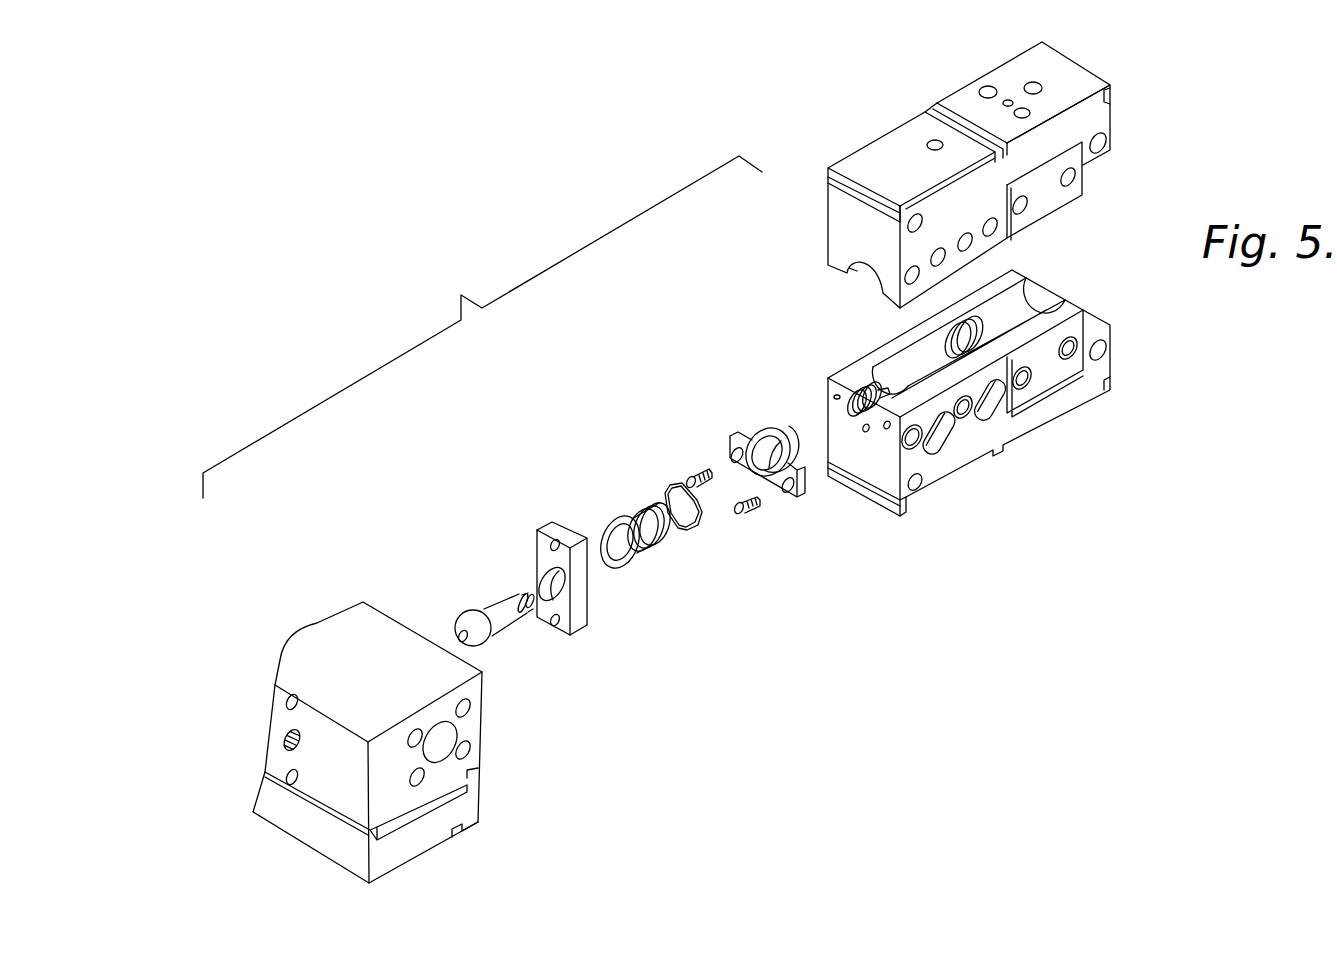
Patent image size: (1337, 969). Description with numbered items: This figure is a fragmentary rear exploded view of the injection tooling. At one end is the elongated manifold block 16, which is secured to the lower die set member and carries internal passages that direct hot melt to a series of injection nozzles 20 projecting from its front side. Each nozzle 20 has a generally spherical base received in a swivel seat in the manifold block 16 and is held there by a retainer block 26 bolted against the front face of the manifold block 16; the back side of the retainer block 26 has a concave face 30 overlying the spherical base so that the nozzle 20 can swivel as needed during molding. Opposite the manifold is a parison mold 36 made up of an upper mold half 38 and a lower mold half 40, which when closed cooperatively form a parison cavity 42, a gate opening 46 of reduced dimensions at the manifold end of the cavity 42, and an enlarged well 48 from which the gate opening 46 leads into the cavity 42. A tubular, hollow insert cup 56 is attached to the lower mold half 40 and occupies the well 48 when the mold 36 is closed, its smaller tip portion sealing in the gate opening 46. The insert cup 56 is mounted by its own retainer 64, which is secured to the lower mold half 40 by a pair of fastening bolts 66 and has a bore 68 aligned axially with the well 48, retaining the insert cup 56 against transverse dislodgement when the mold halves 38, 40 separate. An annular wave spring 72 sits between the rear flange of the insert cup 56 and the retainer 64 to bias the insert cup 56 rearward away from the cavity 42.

The manifold block 16 is at (437, 675).
The injection nozzle 20 is at (495, 612).
The retainer block 26 is at (545, 542).
The concave face 30 is at (560, 601).
The parison mold 36 is at (848, 130).
The upper mold half 38 is at (1005, 76).
The lower mold half 40 is at (963, 465).
The parison cavity 42 is at (922, 363).
The gate opening 46 is at (883, 393).
The well 48 is at (868, 410).
The insert cup 56 is at (648, 545).
The retainer 64 is at (765, 430).
The fastening bolts 66 is at (690, 476).
The bore 68 is at (769, 460).
The spring 72 is at (667, 490).